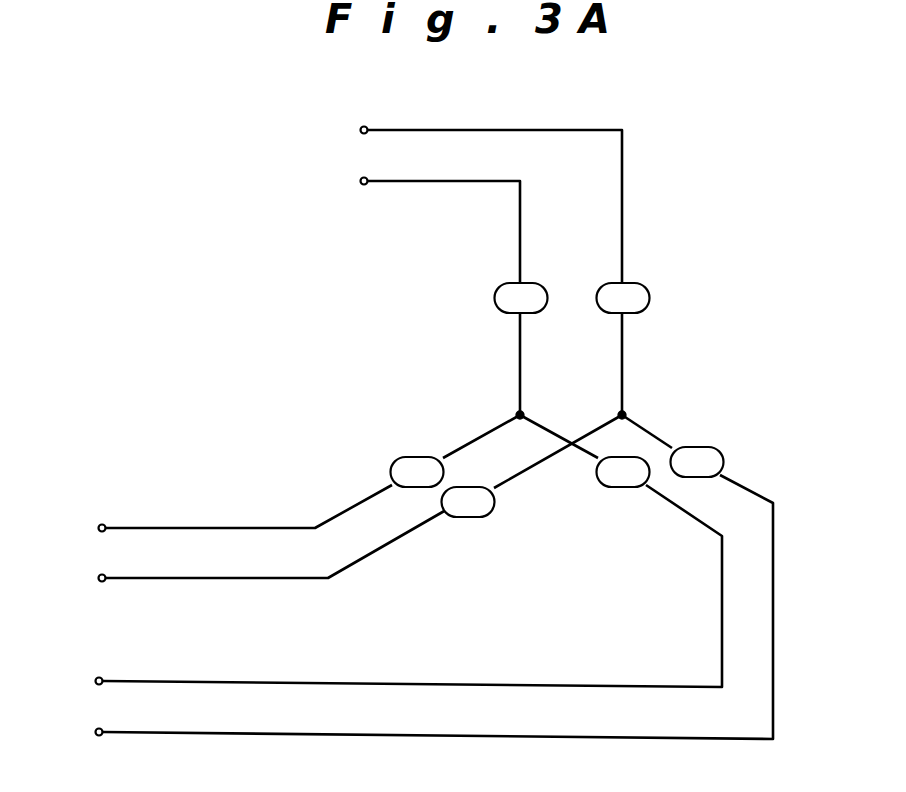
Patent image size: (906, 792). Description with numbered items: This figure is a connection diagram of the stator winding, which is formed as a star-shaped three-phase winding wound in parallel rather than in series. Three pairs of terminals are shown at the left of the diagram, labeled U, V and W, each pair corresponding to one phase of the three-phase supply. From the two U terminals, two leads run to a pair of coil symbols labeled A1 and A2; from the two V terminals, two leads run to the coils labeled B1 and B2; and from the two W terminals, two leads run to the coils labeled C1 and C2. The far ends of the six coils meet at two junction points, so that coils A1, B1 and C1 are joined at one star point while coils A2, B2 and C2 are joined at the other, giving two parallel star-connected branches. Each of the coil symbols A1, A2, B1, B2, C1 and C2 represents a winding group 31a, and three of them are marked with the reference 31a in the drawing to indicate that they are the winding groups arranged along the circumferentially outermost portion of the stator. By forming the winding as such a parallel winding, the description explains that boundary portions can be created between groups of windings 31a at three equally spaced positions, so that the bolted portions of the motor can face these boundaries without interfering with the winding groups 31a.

The winding group 31a is at (615, 417).
The A-phase coil 1 A1 is at (521, 298).
The A-phase coil 2 A2 is at (623, 298).
The B-phase coil 1 B1 is at (417, 472).
The B-phase coil 2 B2 is at (468, 502).
The C-phase coil 1 C1 is at (623, 472).
The C-phase coil 2 C2 is at (697, 462).
The U-phase terminal U is at (475, 205).
The V-phase terminal V is at (255, 533).
The W-phase terminal W is at (417, 607).